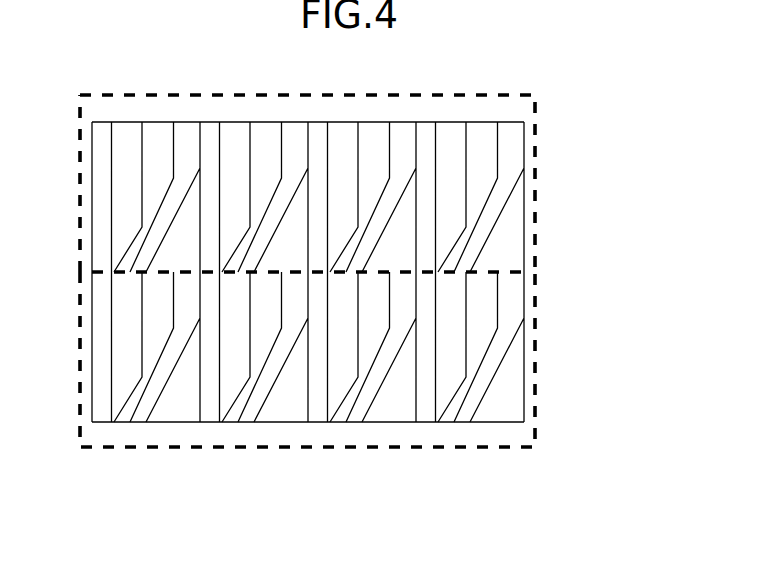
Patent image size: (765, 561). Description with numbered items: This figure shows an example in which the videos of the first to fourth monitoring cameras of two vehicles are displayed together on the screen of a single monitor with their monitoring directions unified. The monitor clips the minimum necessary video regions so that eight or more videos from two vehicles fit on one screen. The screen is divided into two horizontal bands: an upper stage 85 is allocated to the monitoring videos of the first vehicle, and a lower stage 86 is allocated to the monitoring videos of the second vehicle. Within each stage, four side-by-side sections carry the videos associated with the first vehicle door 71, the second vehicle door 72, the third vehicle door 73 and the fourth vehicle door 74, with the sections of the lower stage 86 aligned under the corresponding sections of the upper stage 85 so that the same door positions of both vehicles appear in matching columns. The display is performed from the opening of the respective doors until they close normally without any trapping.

The first vehicle door 71 is at (127, 134).
The second vehicle door 72 is at (238, 134).
The third vehicle door 73 is at (339, 134).
The fourth vehicle door 74 is at (452, 134).
The upper stage 85 is at (538, 157).
The lower stage 86 is at (538, 382).